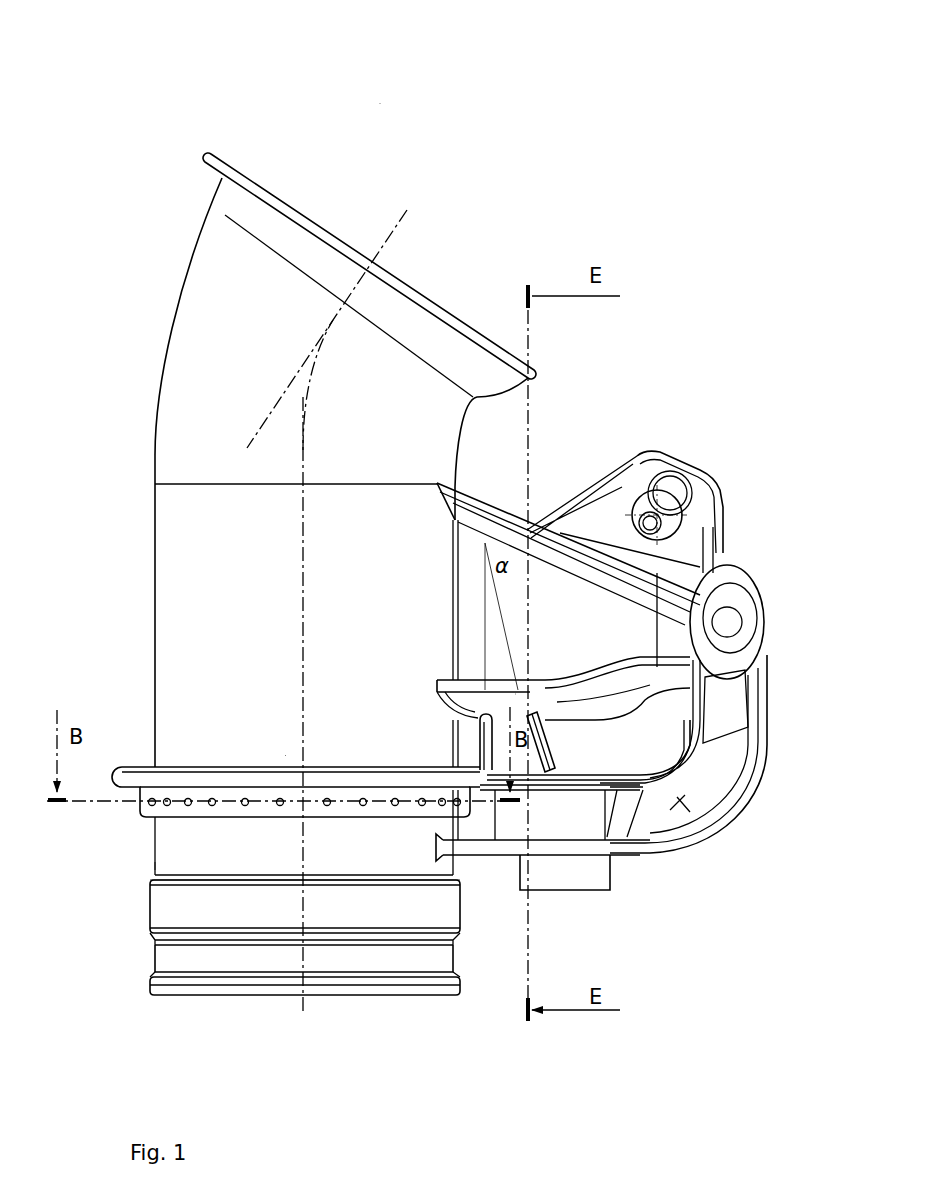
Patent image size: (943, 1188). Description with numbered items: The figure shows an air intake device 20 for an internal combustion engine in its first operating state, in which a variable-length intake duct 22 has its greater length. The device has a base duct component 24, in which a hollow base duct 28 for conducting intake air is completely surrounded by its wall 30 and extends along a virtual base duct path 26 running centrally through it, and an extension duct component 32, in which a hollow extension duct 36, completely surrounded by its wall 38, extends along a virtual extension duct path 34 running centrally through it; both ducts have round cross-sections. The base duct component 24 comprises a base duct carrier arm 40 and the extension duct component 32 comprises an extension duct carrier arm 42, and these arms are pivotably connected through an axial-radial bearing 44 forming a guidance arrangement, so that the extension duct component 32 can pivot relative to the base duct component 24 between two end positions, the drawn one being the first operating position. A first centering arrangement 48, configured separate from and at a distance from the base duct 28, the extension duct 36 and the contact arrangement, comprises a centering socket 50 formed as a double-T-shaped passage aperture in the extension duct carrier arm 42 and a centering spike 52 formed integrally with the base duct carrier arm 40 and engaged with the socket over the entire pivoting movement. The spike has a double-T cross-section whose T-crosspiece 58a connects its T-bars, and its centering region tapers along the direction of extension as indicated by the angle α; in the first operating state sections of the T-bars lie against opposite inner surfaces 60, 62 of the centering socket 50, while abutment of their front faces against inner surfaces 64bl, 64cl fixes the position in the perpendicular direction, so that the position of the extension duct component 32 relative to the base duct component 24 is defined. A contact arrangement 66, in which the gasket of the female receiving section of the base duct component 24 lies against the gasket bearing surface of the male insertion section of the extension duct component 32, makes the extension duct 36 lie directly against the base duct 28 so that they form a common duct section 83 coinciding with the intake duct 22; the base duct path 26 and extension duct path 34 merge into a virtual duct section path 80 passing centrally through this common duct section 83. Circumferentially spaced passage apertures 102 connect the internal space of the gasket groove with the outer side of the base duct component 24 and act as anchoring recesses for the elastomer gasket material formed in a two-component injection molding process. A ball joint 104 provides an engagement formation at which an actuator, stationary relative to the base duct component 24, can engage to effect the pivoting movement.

The air intake device 20 is at (380, 103).
The intake duct 22 is at (190, 578).
The base duct component 24 is at (148, 893).
The base duct path 26 is at (303, 845).
The base duct 28 is at (178, 853).
The wall 30 is at (155, 865).
The extension duct component 32 is at (155, 510).
The extension duct path 34 is at (310, 417).
The extension duct 36 is at (185, 395).
The wall 38 is at (155, 430).
The base duct carrier arm 40 is at (697, 807).
The extension duct carrier arm 42 is at (466, 518).
The axial-radial bearing 44 is at (733, 620).
The first centering arrangement 48 is at (444, 708).
The centering socket 50 is at (517, 693).
The centering spike 52 is at (500, 745).
The T-crosspiece 58a is at (535, 768).
The inner surface 60 is at (475, 732).
The inner surface 62 is at (543, 727).
The inner surface 64bl is at (468, 692).
The inner surface 64cl is at (575, 675).
The contact arrangement 66 is at (104, 760).
The duct section path 80 is at (302, 693).
The common duct section 83 is at (285, 755).
The passage apertures 102 is at (400, 806).
The ball joint 104 is at (668, 512).